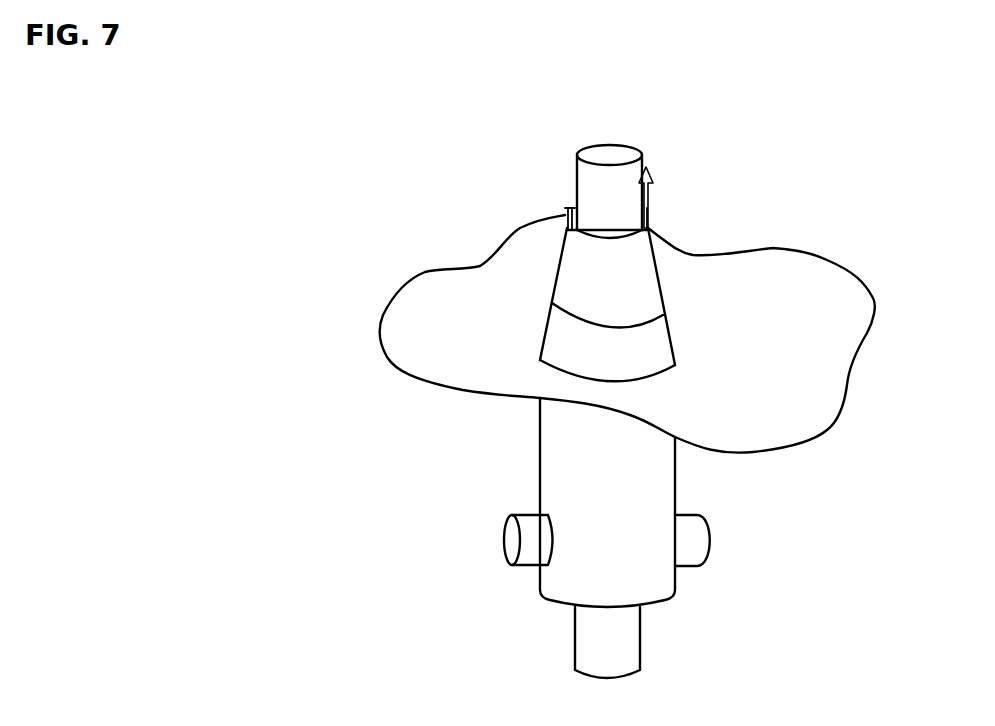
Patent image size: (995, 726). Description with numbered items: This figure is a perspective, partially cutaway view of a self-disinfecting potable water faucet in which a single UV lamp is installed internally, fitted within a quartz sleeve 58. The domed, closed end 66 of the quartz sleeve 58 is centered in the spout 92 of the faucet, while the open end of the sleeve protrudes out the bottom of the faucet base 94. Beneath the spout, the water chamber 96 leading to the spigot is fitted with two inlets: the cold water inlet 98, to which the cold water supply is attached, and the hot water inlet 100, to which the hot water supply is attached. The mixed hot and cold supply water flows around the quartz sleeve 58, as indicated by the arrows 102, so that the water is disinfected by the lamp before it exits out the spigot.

The quartz sleeve 58 is at (608, 635).
The domed, closed end 66 is at (644, 153).
The spout 92 is at (620, 292).
The faucet base 94 is at (433, 315).
The water chamber 96 is at (535, 470).
The cold water inlet 98 is at (778, 537).
The hot water inlet 100 is at (437, 537).
The arrows 102 is at (580, 202).